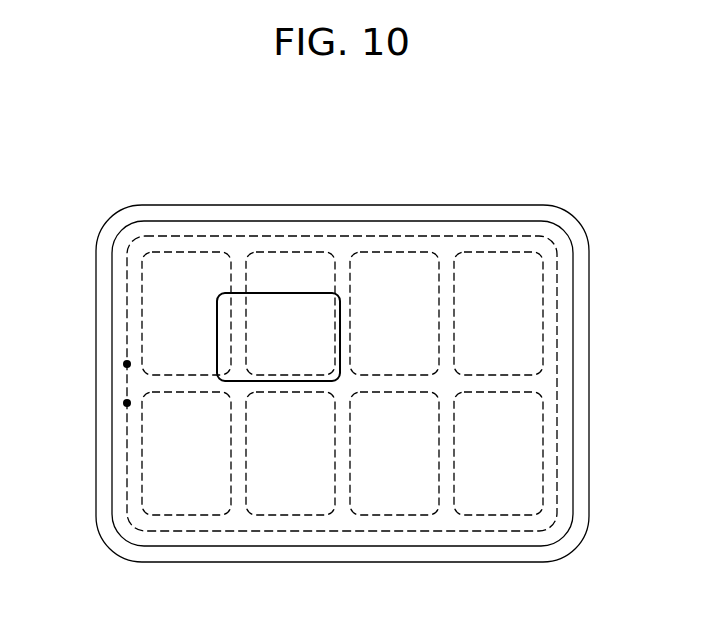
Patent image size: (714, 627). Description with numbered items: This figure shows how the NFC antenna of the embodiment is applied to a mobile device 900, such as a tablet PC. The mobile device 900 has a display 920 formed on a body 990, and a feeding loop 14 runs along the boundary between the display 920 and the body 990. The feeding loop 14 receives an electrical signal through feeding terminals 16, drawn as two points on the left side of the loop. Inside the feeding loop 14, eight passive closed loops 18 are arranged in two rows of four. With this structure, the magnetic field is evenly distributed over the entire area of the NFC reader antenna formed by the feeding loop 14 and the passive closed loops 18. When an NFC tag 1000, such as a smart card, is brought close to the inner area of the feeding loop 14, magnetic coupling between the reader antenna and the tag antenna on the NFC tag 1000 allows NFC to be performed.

The mobile device 900 is at (564, 178).
The body 990 is at (589, 305).
The display 920 is at (573, 387).
The feeding loop 14 is at (557, 347).
The passive closed loops 18 is at (186, 252).
The NFC tag 1000 is at (217, 331).
The feeding terminals 16 is at (127, 364).